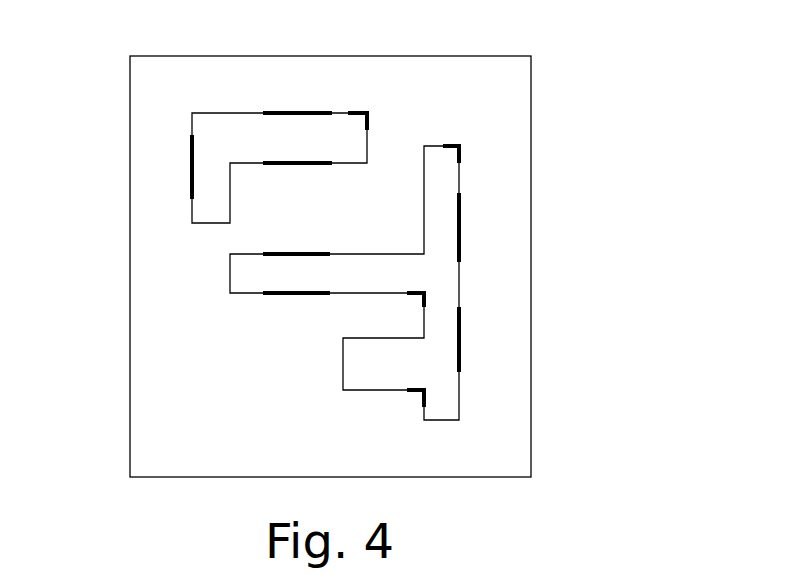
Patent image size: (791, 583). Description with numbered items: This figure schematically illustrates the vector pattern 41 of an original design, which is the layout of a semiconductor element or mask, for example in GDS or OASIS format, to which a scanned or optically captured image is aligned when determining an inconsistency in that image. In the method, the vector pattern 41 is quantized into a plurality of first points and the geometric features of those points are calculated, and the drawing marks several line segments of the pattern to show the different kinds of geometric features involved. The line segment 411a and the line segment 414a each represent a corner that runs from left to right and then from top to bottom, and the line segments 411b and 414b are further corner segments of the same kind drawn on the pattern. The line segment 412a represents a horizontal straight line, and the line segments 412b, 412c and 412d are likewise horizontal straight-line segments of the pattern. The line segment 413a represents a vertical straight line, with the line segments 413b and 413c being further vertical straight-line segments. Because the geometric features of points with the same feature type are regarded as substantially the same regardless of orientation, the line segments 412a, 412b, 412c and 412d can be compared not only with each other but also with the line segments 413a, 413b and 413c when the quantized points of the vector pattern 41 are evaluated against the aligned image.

The vector pattern 41 is at (227, 118).
The line segment 411a is at (362, 113).
The line segment 411b is at (455, 142).
The line segment 412a is at (283, 112).
The line segment 412b is at (302, 162).
The line segment 412c is at (275, 253).
The line segment 412d is at (285, 296).
The line segment 413a is at (190, 153).
The line segment 413b is at (460, 223).
The line segment 413c is at (460, 343).
The line segment 414a is at (427, 297).
The line segment 414b is at (427, 395).